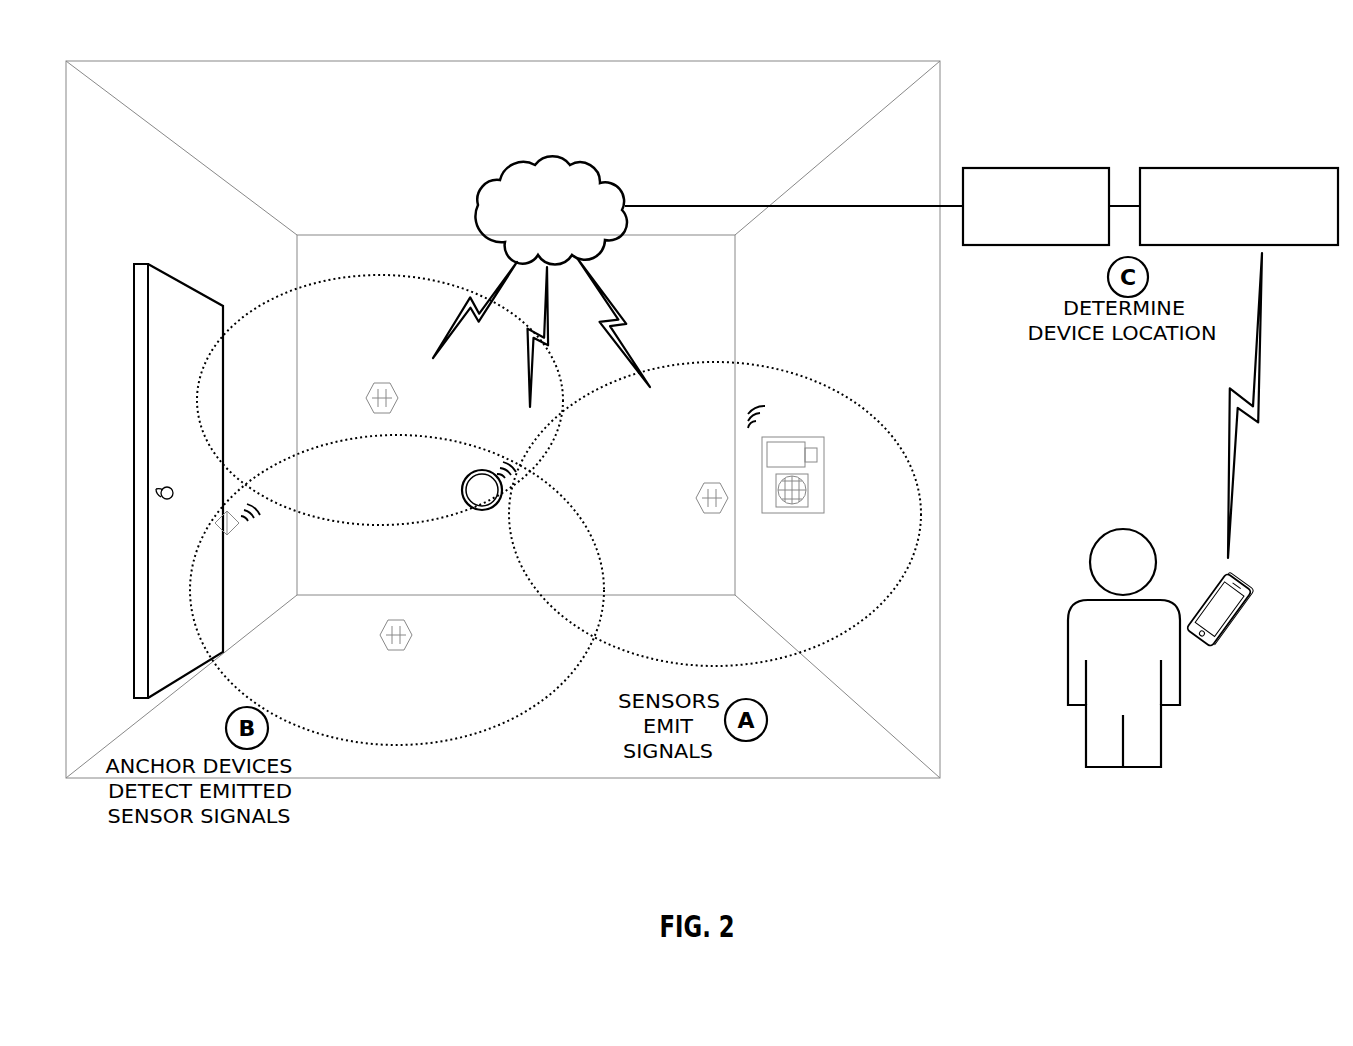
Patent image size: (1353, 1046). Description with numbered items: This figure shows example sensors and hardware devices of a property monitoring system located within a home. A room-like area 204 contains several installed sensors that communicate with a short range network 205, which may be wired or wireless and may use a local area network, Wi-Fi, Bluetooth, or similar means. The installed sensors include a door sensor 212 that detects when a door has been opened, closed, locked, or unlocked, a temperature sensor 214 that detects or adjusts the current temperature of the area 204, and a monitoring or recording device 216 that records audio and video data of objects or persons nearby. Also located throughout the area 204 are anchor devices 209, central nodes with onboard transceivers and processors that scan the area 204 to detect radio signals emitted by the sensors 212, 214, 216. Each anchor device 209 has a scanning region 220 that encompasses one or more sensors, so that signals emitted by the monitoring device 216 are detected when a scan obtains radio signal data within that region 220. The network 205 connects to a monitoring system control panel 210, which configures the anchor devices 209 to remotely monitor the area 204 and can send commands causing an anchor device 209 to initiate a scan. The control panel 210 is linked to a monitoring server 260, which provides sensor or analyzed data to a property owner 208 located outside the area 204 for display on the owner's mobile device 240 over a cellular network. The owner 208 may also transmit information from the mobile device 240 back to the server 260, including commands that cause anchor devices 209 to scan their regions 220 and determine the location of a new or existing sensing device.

The area 204 is at (207, 96).
The network 205 is at (476, 203).
The property owner 208 is at (1068, 612).
The anchor device 209 is at (388, 646).
The monitoring system control panel 210 is at (1040, 168).
The door sensor 212 is at (222, 514).
The temperature sensor 214 is at (461, 483).
The monitoring or recording device 216 is at (825, 483).
The scanning region 220 is at (760, 363).
The mobile device 240 is at (1229, 644).
The monitoring server 260 is at (1208, 168).